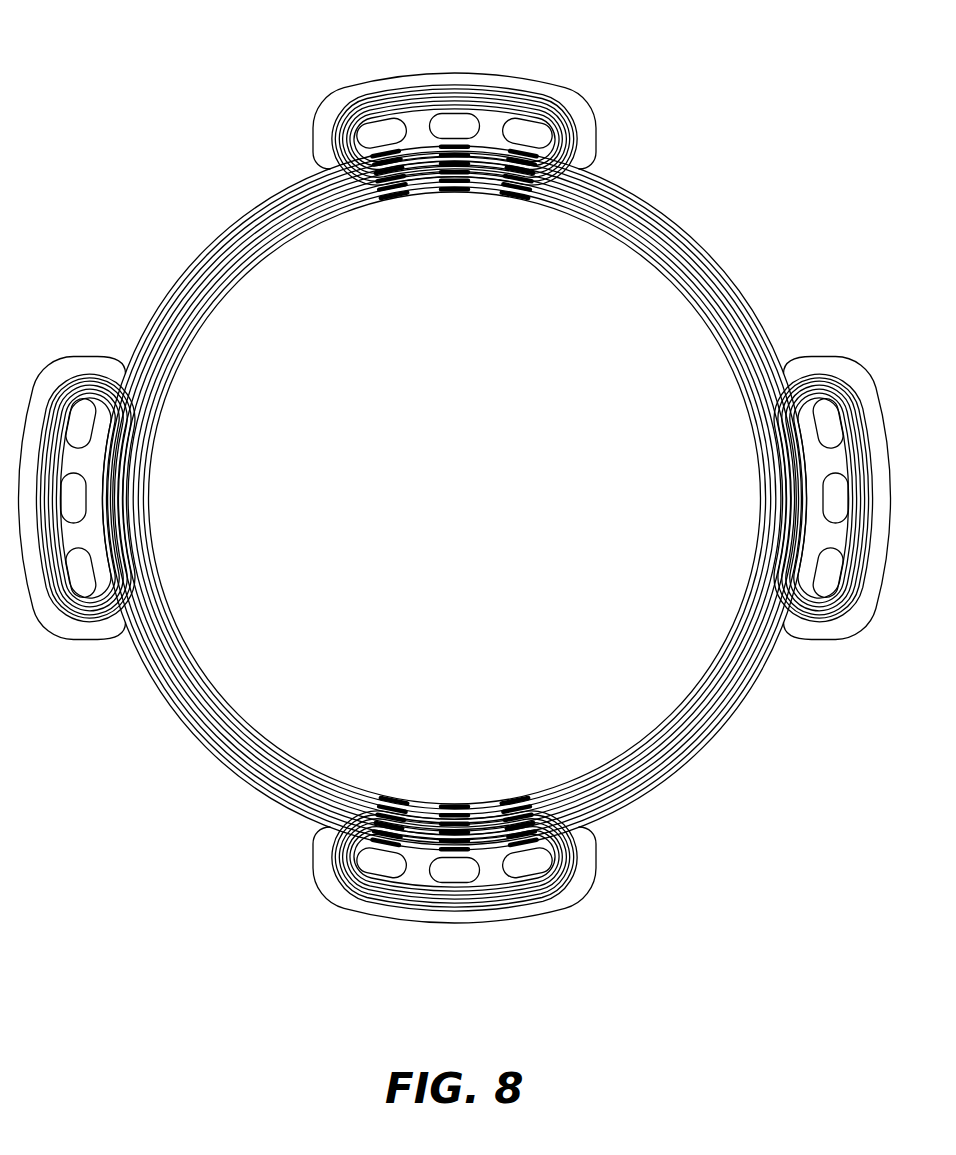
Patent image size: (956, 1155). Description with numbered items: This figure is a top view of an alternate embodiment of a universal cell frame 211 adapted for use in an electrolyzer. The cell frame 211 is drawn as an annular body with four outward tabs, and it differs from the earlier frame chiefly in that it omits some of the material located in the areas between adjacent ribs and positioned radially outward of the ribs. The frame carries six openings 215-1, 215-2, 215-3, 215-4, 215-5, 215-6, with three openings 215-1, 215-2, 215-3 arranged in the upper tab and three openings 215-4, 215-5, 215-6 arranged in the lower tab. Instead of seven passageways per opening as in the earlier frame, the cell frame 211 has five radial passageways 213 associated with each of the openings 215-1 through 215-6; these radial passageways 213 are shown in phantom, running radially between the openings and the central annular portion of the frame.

The universal cell frame 211 is at (226, 852).
The radial passageways 213 is at (513, 198).
The opening 215-1 is at (378, 130).
The opening 215-2 is at (452, 124).
The opening 215-3 is at (523, 129).
The opening 215-4 is at (379, 866).
The opening 215-5 is at (452, 873).
The opening 215-6 is at (524, 866).